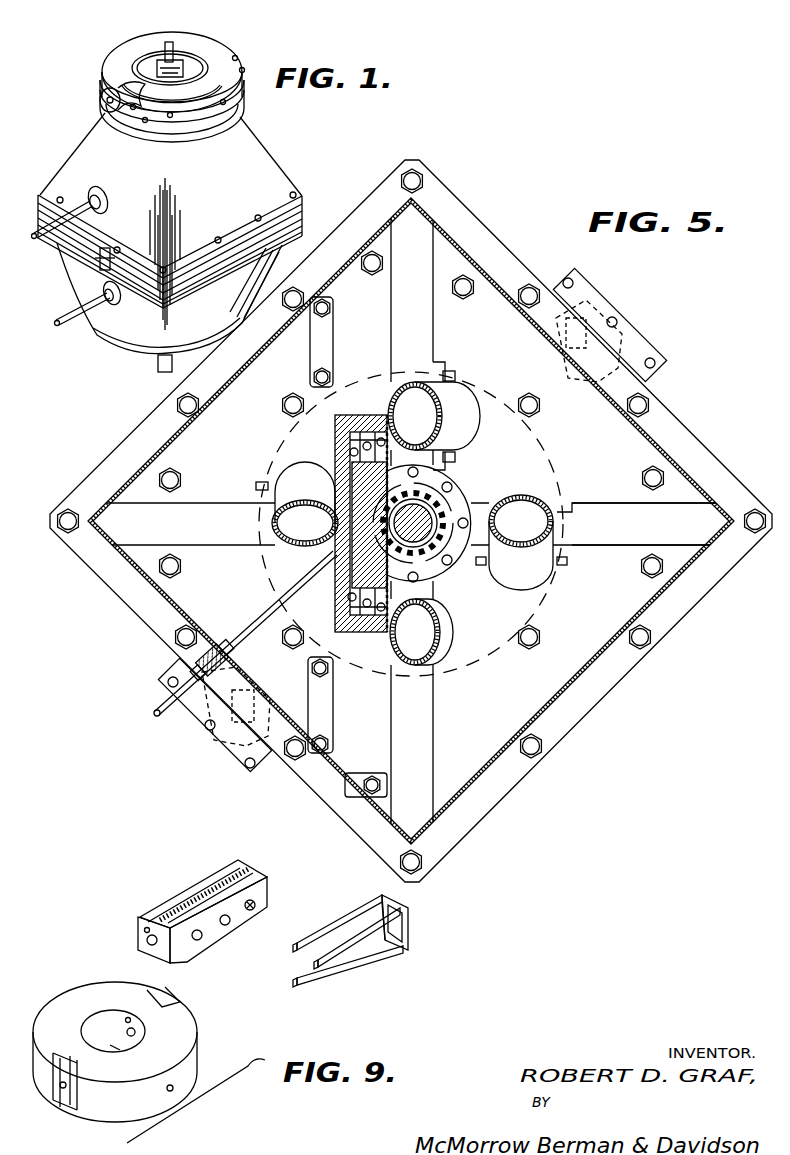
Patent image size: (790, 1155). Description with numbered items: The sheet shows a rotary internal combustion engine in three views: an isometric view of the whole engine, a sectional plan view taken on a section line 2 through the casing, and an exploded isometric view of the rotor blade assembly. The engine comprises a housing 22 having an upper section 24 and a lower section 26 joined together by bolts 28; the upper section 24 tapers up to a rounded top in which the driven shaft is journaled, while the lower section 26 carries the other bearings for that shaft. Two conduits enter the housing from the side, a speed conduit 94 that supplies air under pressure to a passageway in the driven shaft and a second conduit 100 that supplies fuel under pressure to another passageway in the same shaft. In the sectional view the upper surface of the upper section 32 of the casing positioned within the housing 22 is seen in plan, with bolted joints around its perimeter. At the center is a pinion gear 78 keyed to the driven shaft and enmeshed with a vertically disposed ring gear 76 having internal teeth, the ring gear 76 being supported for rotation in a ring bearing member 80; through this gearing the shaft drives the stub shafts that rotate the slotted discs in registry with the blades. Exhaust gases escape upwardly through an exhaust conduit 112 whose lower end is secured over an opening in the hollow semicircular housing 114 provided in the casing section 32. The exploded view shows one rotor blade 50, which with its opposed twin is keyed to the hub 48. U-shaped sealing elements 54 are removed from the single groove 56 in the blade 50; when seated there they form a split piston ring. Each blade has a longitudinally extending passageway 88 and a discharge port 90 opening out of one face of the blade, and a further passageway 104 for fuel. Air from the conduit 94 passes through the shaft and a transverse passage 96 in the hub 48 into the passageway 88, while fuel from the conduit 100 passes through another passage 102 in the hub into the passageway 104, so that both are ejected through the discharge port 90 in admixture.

In FIG. 1, the section line 2- 2 is at (168, 45).
In FIG. 1, the housing 22 is at (279, 162).
In FIG. 1, the upper section 24 is at (270, 183).
In FIG. 1, the lower section 26 is at (263, 265).
In FIG. 1, the bolts 28 is at (296, 210).
In FIG. 5, the upper section 32 is at (504, 339).
In FIG. 9, the hub 48 is at (135, 1052).
In FIG. 9, the rotor blade 50 is at (262, 906).
In FIG. 9, the sealing elements 54 is at (352, 902).
In FIG. 9, the groove 56 is at (232, 868).
In FIG. 5, the ring gear 76 is at (352, 568).
In FIG. 5, the pinion gear 78 is at (428, 502).
In FIG. 5, the ring bearing member 80 is at (344, 636).
In FIG. 9, the passageway 88 is at (155, 946).
In FIG. 9, the discharge port 90 is at (250, 910).
In FIG. 1, the speed conduit 94 is at (58, 327).
In FIG. 5, the speed conduit 94 is at (158, 722).
In FIG. 9, the transverse passage 96 is at (136, 1040).
In FIG. 1, the second conduit 100 is at (34, 240).
In FIG. 9, the passage 102 is at (127, 1017).
In FIG. 9, the passageway 104 is at (140, 928).
In FIG. 5, the exhaust conduit 112 is at (535, 497).
In FIG. 5, the hollow semicircular housing 114 is at (603, 510).